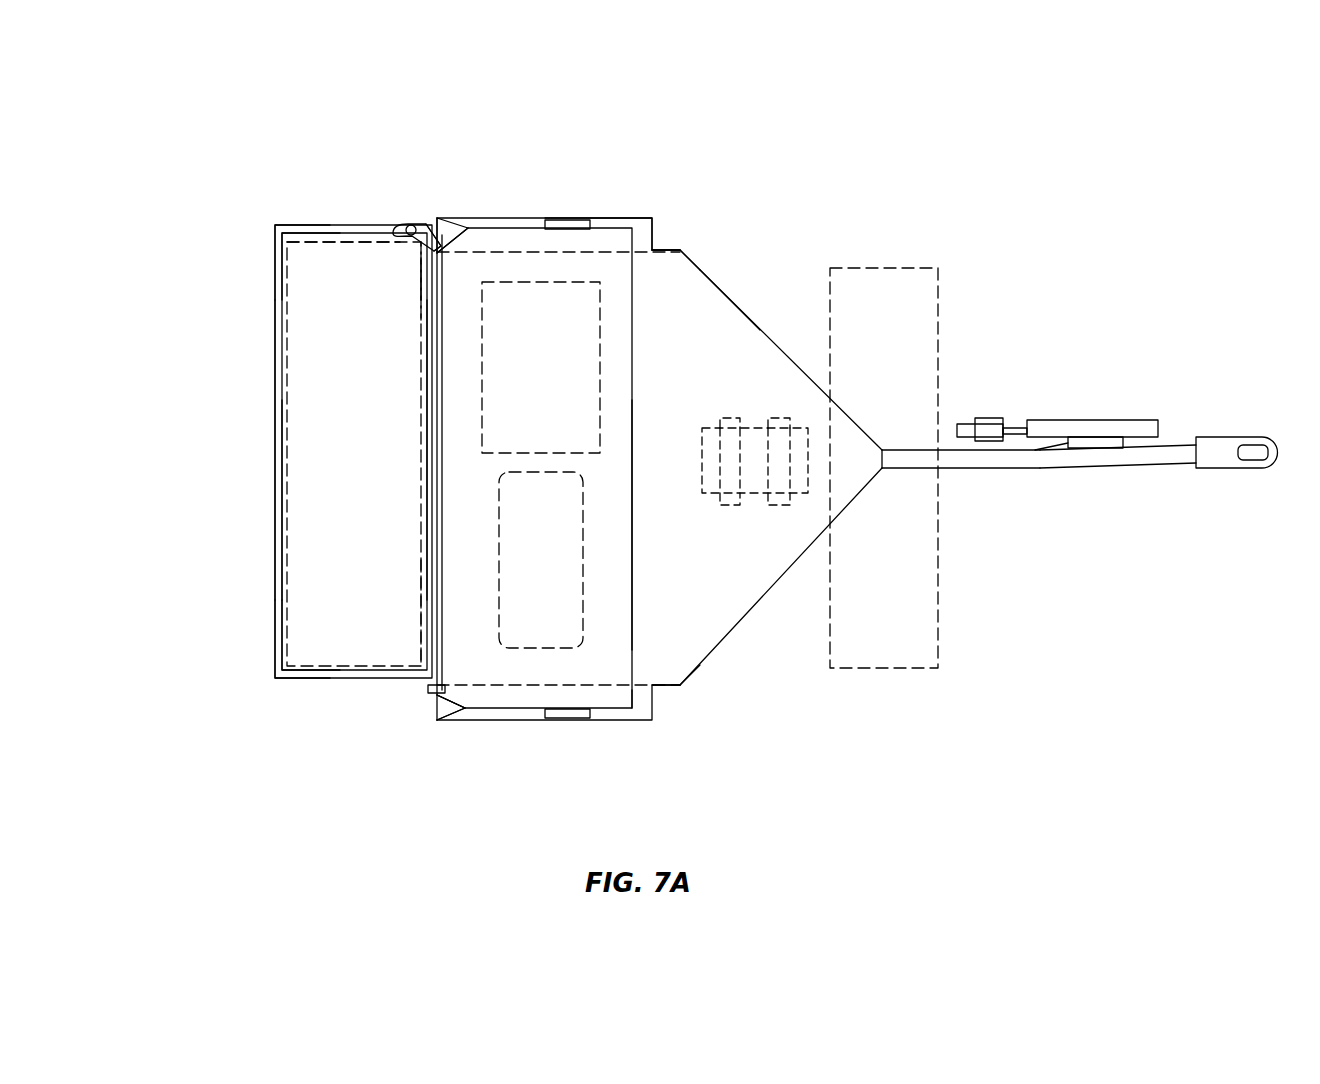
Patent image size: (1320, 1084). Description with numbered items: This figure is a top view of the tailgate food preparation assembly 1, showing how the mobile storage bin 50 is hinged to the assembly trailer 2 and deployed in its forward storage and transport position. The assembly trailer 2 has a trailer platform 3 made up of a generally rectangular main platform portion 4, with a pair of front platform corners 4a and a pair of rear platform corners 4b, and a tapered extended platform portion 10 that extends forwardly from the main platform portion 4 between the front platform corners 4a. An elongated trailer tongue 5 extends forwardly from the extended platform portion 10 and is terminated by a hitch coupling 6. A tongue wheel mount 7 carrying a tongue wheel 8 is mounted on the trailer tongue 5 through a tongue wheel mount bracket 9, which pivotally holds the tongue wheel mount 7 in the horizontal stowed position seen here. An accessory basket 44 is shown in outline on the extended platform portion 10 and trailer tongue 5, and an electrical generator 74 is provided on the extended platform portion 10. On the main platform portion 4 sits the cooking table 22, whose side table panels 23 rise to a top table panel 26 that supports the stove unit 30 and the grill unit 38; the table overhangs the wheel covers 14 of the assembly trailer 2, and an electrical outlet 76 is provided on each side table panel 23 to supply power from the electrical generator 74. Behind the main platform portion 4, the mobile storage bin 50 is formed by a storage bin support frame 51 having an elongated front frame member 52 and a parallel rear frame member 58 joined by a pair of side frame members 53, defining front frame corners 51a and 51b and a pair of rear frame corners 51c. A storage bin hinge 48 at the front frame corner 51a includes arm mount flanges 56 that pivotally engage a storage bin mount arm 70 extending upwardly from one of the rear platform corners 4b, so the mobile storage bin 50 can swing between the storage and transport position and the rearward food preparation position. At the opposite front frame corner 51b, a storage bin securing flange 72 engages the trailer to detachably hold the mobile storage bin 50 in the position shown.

The tailgate food preparation assembly 1 is at (195, 148).
The assembly trailer 2 is at (760, 645).
The trailer platform 3 is at (668, 245).
The main platform portion 4 is at (650, 650).
The front platform corners 4a is at (683, 250).
The rear platform corners 4b is at (432, 228).
The trailer tongue 5 is at (1140, 458).
The hitch coupling 6 is at (1220, 440).
The tongue wheel mount 7 is at (1072, 420).
The tongue wheel 8 is at (962, 425).
The tongue wheel mount bracket 9 is at (1037, 452).
The extended platform portion 10 is at (697, 305).
The wheel covers 14 is at (448, 252).
The cooking table 22 is at (600, 220).
The side table panels 23 is at (455, 252).
The top table panel 26 is at (610, 548).
The stove unit 30 is at (556, 655).
The grill unit 38 is at (522, 278).
The accessory basket 44 is at (872, 262).
The storage bin hinge 48 is at (421, 262).
The mobile storage bin 50 is at (262, 272).
The storage bin support frame 51 is at (270, 454).
The front frame corner 51a is at (418, 262).
The front frame corner 51b is at (445, 665).
The rear frame corners 51c is at (275, 226).
The front frame member 52 is at (432, 457).
The side frame members 53 is at (300, 225).
The arm mount flanges 56 is at (395, 230).
The rear frame member 58 is at (280, 522).
The storage bin mount arm 70 is at (382, 248).
The storage bin securing flange 72 is at (458, 720).
The electrical generator 74 is at (747, 430).
The electrical outlet 76 is at (572, 226).